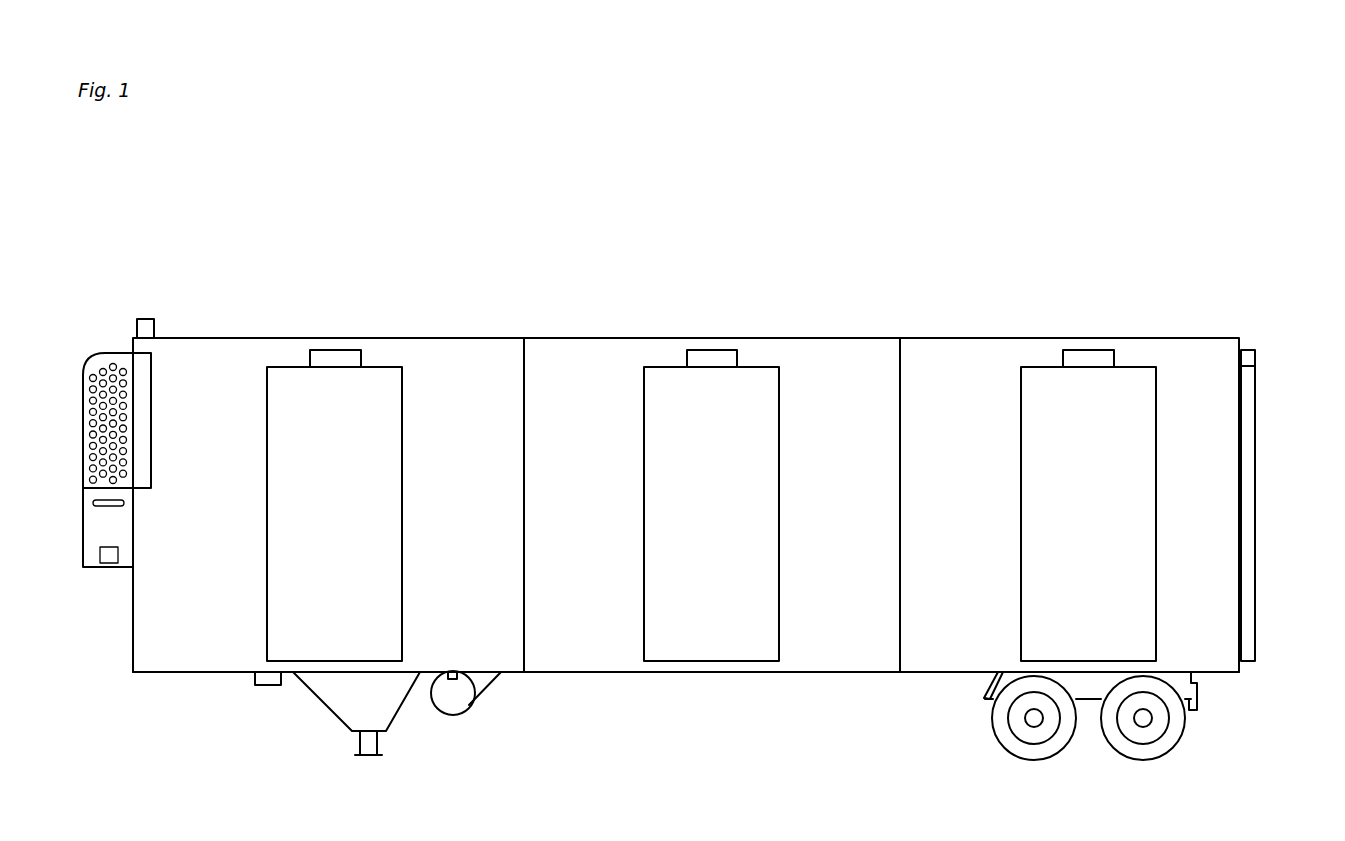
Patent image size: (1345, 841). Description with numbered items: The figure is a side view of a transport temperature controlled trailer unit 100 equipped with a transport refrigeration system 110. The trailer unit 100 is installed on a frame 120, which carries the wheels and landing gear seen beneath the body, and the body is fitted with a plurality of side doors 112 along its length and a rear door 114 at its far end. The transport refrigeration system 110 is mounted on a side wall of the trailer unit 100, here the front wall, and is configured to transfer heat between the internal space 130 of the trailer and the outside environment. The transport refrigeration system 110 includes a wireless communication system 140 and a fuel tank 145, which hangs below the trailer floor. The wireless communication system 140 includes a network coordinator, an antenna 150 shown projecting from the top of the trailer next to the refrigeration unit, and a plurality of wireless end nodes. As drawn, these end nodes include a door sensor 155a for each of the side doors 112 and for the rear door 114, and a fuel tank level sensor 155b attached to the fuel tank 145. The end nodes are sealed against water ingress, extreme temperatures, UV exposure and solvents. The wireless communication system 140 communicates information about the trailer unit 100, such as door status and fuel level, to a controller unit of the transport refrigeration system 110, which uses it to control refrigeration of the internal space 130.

The transport temperature controlled trailer unit 100 is at (983, 192).
The transport refrigeration system 110 is at (103, 357).
The side doors 112 is at (403, 395).
The rear door 114 is at (1257, 388).
The frame 120 is at (822, 673).
The internal space 130 is at (560, 383).
The wireless communication system 140 is at (327, 323).
The fuel tank 145 is at (450, 713).
The antenna 150 is at (152, 318).
The door sensor 155a is at (350, 350).
The fuel tank level sensor 155b is at (456, 683).